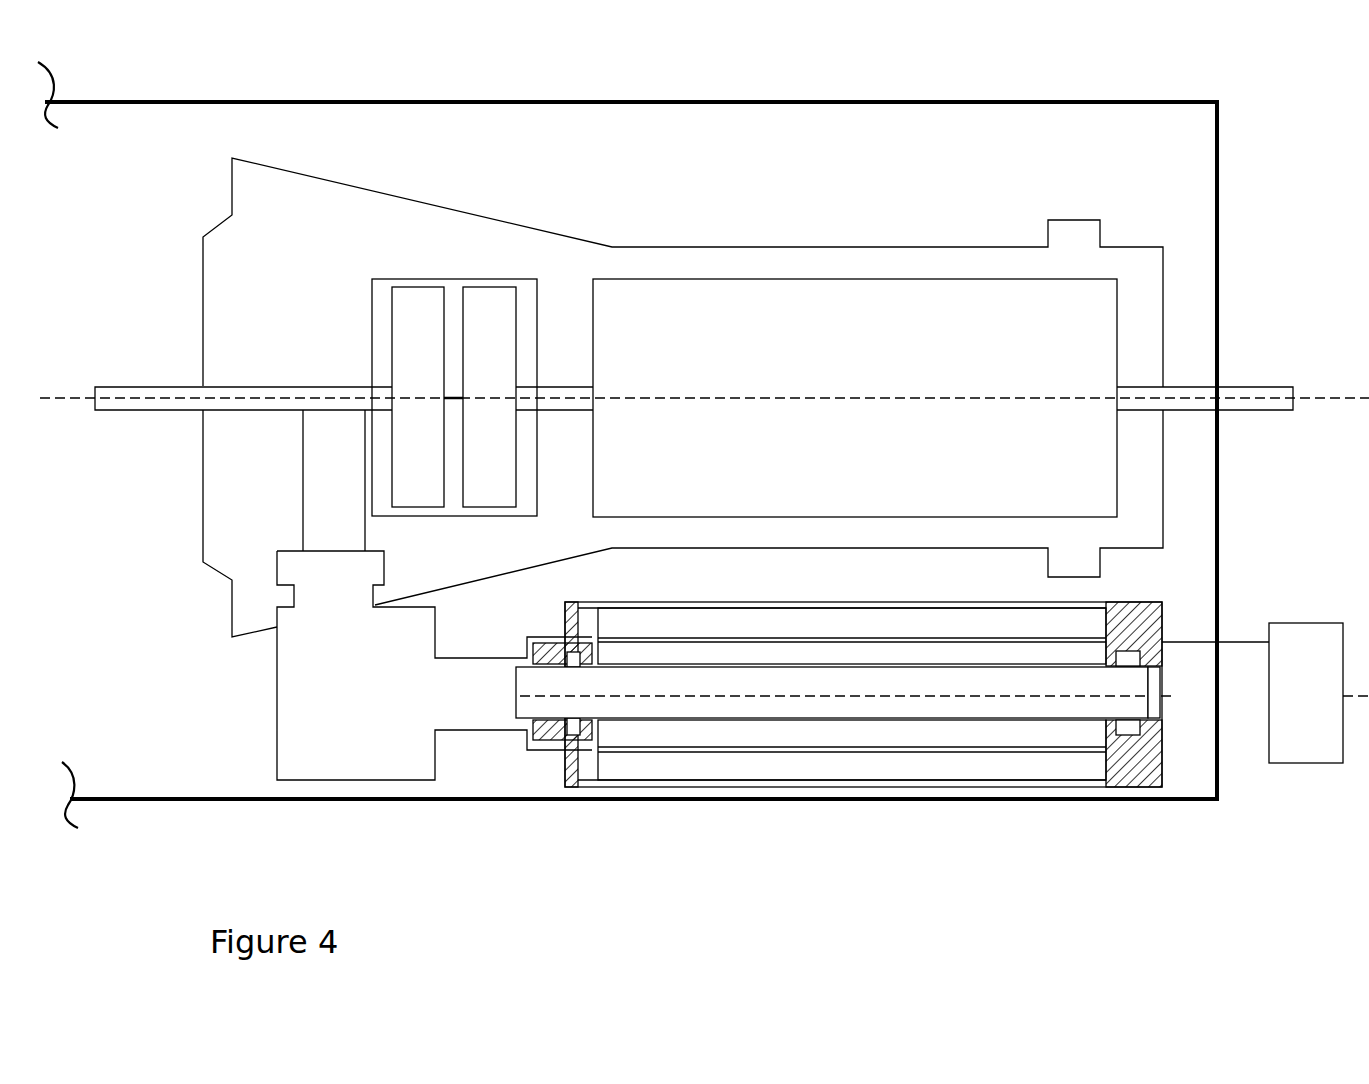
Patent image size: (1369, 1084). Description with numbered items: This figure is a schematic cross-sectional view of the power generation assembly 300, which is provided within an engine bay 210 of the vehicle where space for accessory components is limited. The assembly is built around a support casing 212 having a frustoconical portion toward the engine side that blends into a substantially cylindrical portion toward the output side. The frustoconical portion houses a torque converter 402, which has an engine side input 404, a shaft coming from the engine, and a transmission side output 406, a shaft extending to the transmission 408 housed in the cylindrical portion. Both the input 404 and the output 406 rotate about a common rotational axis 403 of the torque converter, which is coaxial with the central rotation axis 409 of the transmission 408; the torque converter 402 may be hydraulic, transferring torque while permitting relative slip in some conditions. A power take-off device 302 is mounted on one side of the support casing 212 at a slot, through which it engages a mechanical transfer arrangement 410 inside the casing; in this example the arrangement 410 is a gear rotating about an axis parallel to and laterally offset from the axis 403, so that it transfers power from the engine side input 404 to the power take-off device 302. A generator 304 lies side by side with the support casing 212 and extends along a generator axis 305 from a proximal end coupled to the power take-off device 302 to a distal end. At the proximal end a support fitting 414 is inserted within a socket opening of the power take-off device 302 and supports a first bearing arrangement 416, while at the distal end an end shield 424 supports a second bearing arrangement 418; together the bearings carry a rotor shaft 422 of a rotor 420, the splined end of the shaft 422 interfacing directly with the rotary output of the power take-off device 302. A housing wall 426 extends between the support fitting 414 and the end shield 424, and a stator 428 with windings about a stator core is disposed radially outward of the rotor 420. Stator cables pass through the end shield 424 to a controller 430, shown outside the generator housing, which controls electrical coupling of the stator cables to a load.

The engine bay 210 is at (1082, 101).
The power generation assembly 300 is at (915, 159).
The support casing 212 is at (560, 233).
The rotational axis 403 is at (125, 398).
The engine side input 404 is at (272, 386).
The transmission side output 406 is at (555, 386).
The central rotation axis 409 is at (937, 395).
The torque converter 402 is at (447, 278).
The transmission 408 is at (840, 359).
The mechanical transfer arrangement 410 is at (322, 470).
The power take-off device 302 is at (308, 719).
The generator 304 is at (987, 790).
The housing wall 426 is at (802, 788).
The stator 428 is at (770, 620).
The first bearing arrangement 416 is at (578, 730).
The support fitting 414 is at (550, 745).
The rotor 420 is at (713, 724).
The rotor shaft 422 is at (913, 712).
The generator axis 305 is at (1167, 697).
The end shield 424 is at (1165, 610).
The second bearing arrangement 418 is at (1127, 740).
The controller 430 is at (1313, 765).